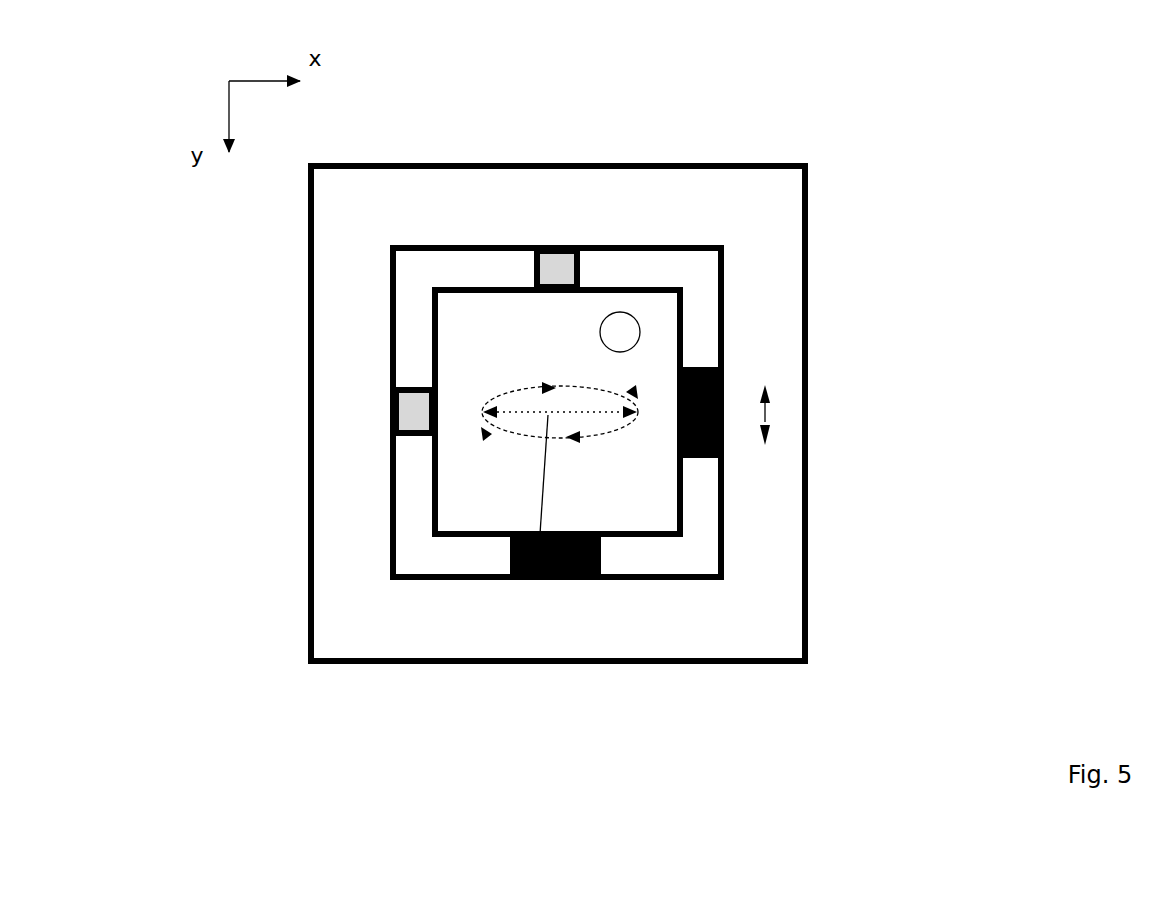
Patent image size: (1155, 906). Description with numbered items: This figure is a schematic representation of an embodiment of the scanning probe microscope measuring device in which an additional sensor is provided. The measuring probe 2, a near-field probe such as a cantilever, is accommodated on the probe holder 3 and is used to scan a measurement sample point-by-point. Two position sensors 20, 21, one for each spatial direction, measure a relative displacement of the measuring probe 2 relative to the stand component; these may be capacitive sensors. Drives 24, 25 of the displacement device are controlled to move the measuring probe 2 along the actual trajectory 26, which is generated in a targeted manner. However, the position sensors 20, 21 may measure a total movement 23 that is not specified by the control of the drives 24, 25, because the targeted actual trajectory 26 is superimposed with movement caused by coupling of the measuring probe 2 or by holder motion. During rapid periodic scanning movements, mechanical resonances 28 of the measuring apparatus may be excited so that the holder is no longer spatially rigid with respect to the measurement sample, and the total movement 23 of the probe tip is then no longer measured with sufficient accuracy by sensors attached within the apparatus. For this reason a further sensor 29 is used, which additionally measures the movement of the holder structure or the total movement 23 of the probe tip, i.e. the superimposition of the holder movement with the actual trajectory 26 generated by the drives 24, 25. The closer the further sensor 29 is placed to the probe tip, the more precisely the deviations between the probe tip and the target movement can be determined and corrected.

The measuring probe 2 is at (450, 444).
The probe holder 3 is at (620, 353).
The position sensor 20 is at (795, 362).
The position sensor 21 is at (547, 504).
The total movement 23 is at (630, 557).
The drive 24 is at (303, 435).
The drive 25 is at (535, 160).
The actual trajectory 26 is at (563, 649).
The mechanical resonances 28 is at (874, 537).
The further sensor 29 is at (650, 221).